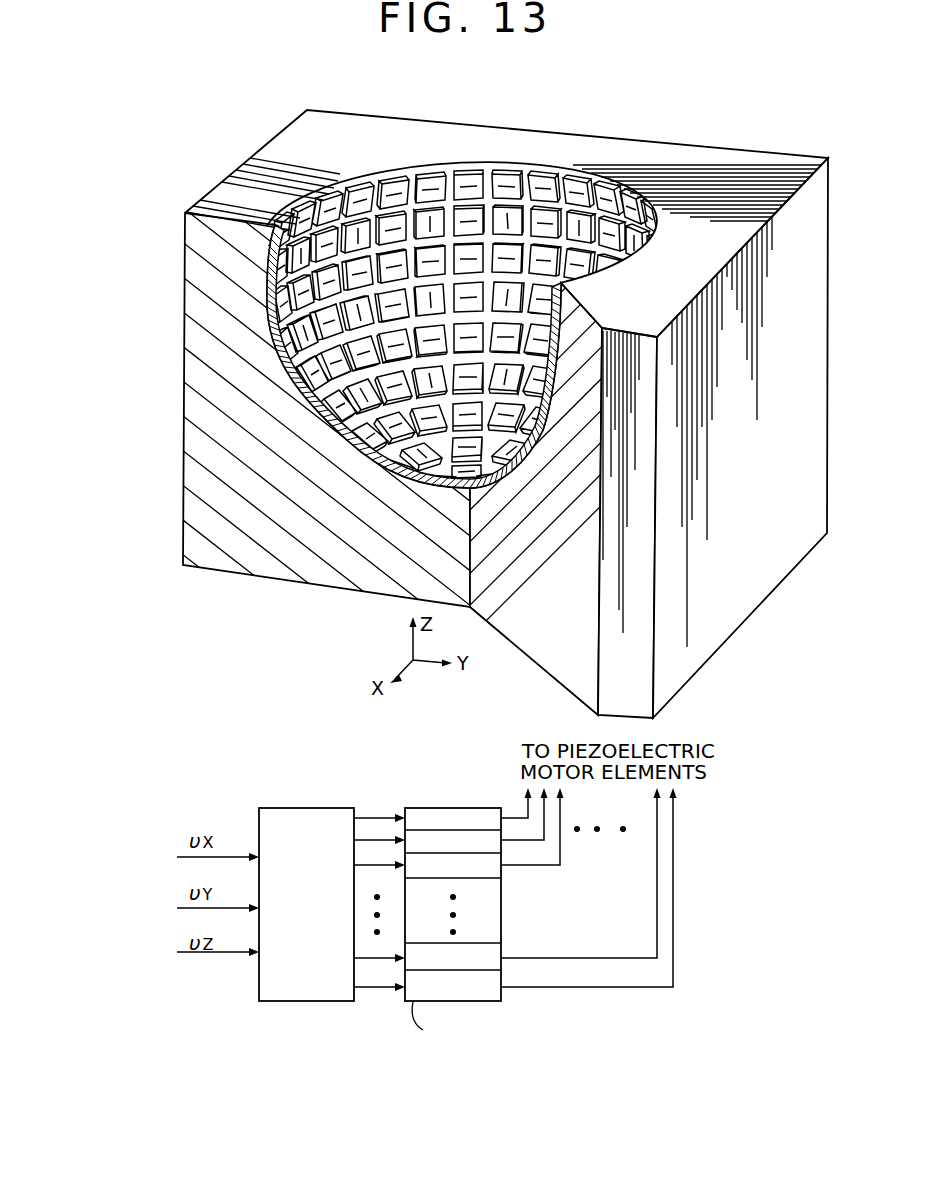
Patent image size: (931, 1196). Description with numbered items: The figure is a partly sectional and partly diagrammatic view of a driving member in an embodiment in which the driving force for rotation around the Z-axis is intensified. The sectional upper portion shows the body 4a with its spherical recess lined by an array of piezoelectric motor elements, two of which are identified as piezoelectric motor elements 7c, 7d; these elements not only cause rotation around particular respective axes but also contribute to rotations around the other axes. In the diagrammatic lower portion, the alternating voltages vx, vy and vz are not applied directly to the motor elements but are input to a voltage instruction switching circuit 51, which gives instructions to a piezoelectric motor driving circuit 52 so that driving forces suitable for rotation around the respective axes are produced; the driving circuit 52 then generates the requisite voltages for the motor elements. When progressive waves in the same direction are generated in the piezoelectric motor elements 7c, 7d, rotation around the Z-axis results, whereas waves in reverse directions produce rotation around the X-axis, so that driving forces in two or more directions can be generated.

The piezoelectric motor element 7c is at (467, 172).
The piezoelectric motor element 7d is at (470, 250).
The stator block with spherical recess 4a is at (703, 158).
The voltage instruction switching circuit 51 is at (313, 808).
The piezoelectric motor driving circuit 52 is at (434, 808).